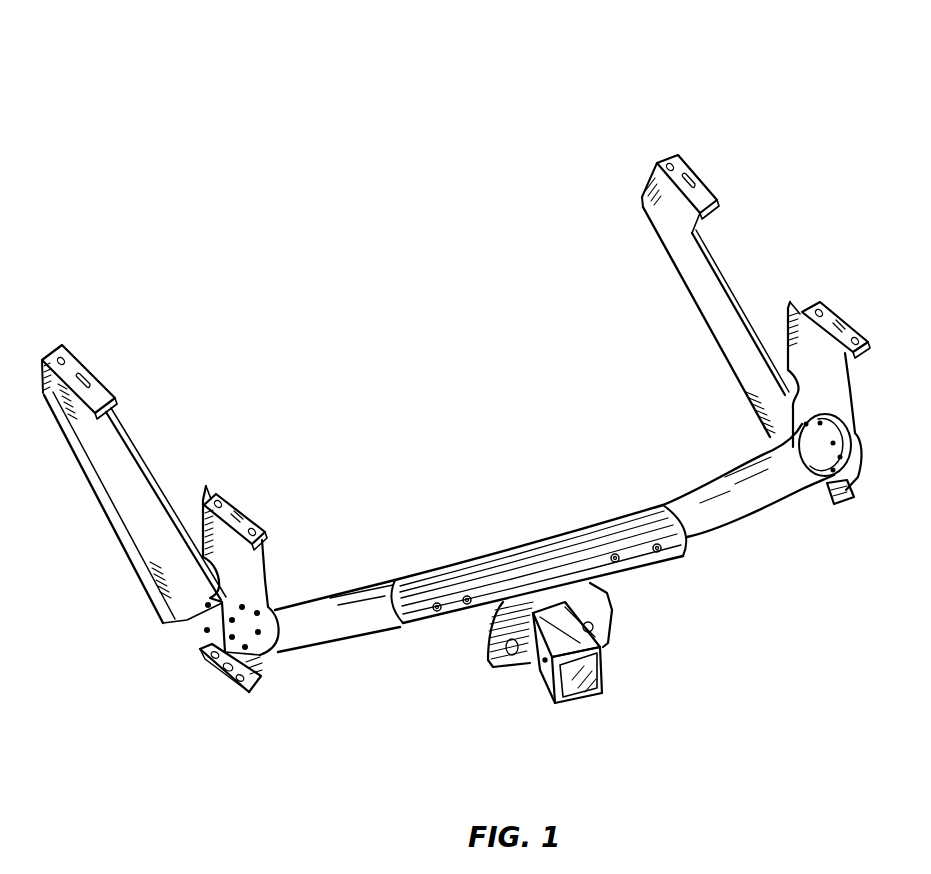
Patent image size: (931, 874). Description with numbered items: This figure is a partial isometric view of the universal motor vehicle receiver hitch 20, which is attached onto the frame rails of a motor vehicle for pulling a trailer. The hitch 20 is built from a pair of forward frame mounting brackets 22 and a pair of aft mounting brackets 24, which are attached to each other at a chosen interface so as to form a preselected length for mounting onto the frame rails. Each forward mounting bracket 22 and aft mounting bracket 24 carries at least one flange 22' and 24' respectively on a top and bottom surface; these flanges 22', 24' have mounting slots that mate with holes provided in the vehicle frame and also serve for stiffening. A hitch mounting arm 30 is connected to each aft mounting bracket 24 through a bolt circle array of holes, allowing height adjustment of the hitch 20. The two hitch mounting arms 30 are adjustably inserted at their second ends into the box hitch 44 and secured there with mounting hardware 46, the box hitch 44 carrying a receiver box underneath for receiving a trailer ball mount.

The universal motor vehicle receiver hitch 20 is at (462, 421).
The forward frame mounting bracket 22 is at (443, 405).
The flange 22' is at (402, 335).
The aft mounting bracket 24 is at (532, 488).
The flange 24' is at (488, 522).
The hitch mounting arm 30 is at (352, 640).
The box hitch 44 is at (614, 676).
The mounting hardware 46 is at (437, 615).